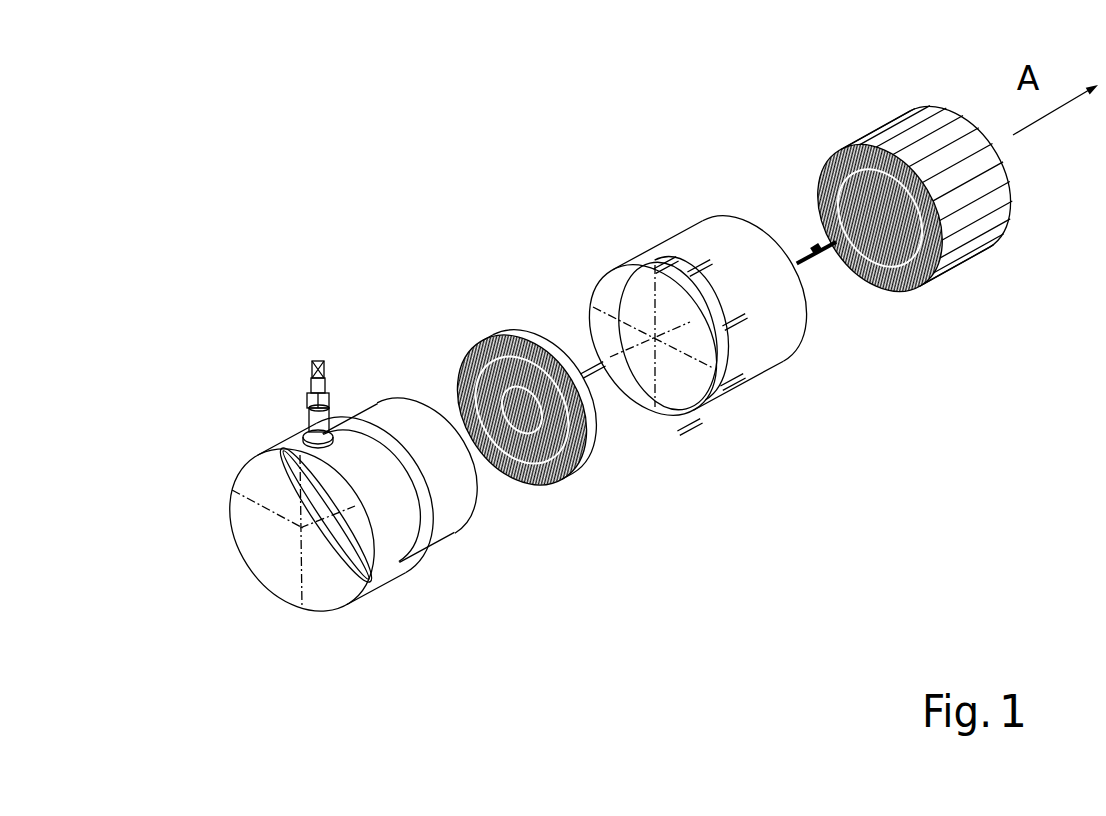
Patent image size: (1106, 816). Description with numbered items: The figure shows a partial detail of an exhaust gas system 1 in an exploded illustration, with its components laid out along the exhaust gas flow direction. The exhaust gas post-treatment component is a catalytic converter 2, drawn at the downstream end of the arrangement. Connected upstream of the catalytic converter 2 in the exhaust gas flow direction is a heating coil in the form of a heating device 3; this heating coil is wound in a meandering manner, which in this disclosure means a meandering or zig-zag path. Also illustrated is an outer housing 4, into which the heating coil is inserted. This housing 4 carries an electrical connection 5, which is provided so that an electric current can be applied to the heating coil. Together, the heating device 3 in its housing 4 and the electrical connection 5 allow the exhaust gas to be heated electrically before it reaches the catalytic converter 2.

The fan assembly 1 is at (299, 169).
The catalytic converter 2 is at (857, 160).
The heating device 3 is at (560, 453).
The outer housing 4 is at (252, 453).
The electrical connection 5 is at (325, 373).